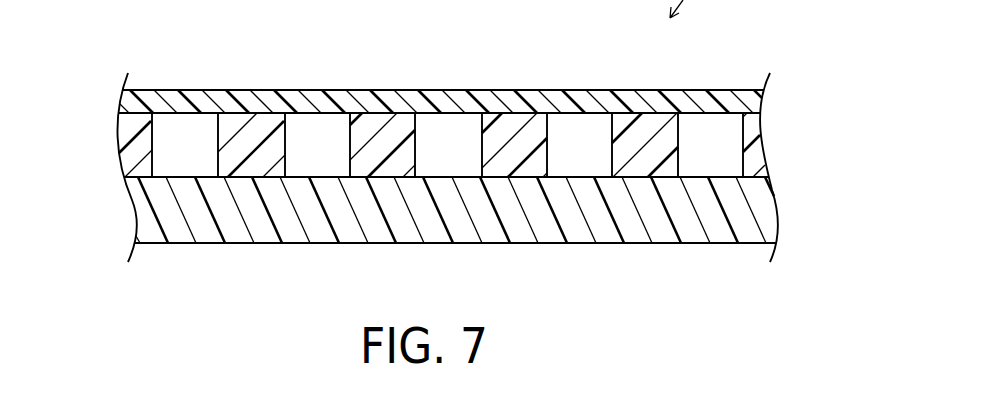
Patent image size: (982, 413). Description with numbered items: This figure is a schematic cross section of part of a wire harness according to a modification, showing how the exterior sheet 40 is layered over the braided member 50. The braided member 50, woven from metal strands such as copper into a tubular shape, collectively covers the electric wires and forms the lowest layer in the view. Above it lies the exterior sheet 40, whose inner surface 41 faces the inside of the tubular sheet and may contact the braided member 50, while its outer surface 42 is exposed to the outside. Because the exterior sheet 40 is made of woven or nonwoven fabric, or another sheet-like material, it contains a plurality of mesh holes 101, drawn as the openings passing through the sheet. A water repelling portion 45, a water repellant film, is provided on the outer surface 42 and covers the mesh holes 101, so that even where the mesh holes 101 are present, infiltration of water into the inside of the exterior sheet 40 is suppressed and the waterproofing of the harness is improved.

The exterior sheet 40 is at (242, 170).
The inner surface 41 is at (529, 178).
The outer surface 42 is at (518, 112).
The water repelling portion 45 is at (317, 95).
The braided member 50 is at (438, 235).
The mesh holes 101 is at (125, 151).